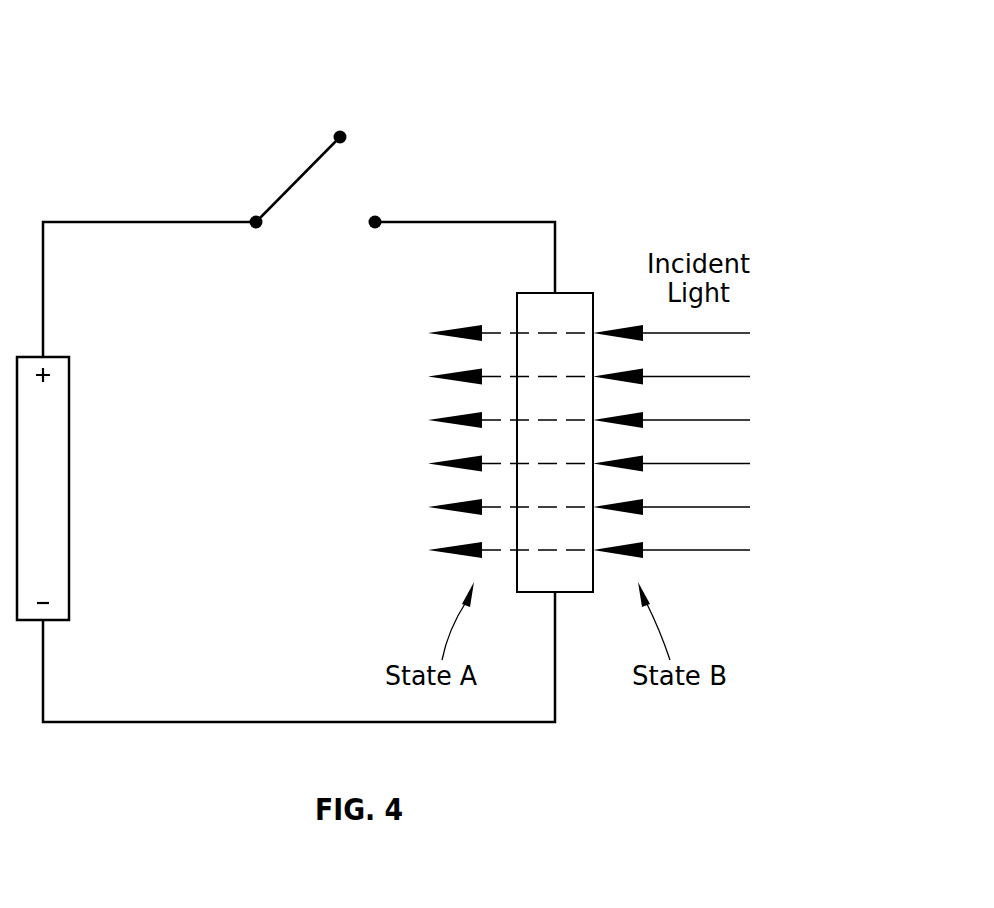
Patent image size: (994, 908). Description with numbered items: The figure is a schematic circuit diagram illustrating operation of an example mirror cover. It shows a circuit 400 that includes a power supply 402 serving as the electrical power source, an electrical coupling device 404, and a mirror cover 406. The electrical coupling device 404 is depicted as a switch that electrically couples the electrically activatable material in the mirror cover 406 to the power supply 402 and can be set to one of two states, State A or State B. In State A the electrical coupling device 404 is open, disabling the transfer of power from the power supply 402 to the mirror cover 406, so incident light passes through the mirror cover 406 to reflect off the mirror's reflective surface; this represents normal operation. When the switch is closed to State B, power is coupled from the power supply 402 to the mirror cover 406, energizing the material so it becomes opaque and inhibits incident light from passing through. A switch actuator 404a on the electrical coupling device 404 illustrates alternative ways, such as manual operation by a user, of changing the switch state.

The circuit 400 is at (562, 64).
The power supply 402 is at (70, 425).
The electrical coupling device 404 is at (277, 202).
The switch actuator 404a is at (280, 164).
The mirror cover 406 is at (573, 302).